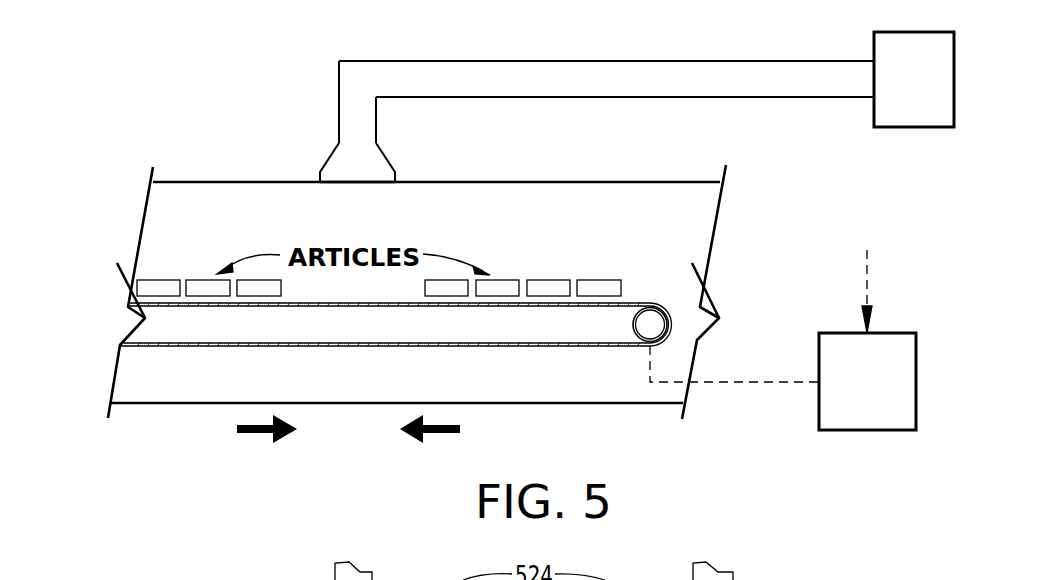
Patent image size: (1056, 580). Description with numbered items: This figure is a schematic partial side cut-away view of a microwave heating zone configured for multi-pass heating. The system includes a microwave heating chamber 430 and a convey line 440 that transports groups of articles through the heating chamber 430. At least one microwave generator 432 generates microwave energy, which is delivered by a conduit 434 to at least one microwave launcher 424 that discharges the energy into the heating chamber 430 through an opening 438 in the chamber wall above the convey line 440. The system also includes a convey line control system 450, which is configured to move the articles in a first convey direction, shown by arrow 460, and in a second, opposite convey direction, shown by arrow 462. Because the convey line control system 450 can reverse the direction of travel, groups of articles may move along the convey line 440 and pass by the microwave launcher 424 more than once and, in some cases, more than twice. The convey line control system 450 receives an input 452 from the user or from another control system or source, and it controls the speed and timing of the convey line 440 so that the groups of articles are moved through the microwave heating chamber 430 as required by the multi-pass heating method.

The microwave launcher 424 is at (336, 158).
The microwave heating chamber 430 is at (678, 182).
The microwave generator 432 is at (954, 61).
The supply conduit 434 is at (550, 98).
The opening 438 is at (363, 183).
The convey line 440 is at (178, 347).
The convey line control system 450 is at (916, 363).
The input 452 is at (867, 275).
The arrow 460 is at (257, 434).
The arrow 462 is at (442, 434).